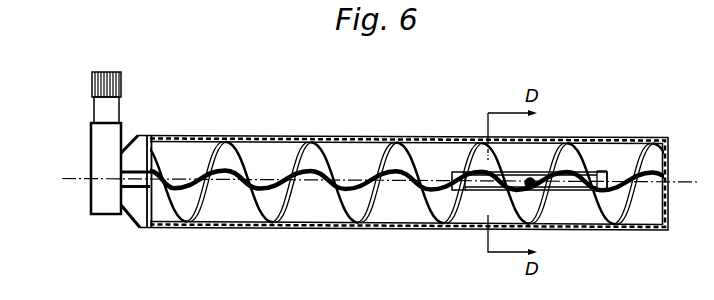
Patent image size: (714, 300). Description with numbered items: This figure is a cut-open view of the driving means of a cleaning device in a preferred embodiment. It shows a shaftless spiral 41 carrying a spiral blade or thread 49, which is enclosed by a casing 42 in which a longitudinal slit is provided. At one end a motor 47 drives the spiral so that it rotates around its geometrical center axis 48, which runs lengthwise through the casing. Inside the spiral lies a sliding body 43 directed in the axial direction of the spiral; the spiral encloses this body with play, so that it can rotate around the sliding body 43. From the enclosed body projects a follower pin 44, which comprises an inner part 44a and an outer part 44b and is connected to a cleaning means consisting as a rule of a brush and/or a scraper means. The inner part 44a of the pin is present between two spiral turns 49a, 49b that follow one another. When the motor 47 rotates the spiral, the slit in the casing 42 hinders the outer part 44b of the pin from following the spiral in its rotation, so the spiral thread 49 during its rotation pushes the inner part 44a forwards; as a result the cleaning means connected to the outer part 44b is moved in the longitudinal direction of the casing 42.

The shaftless spiral 41 is at (347, 222).
The casing 42 is at (192, 134).
The sliding body 43 is at (550, 173).
The follower pin 44 is at (521, 160).
The inner part of the follower pin 44a is at (536, 188).
The outer part of the follower pin 44b is at (524, 188).
The motor 47 is at (98, 147).
The geometrical center axis 48 is at (231, 183).
The spiral blade or thread 49 is at (232, 153).
The spiral turn 49a is at (482, 160).
The spiral turn 49b is at (580, 160).